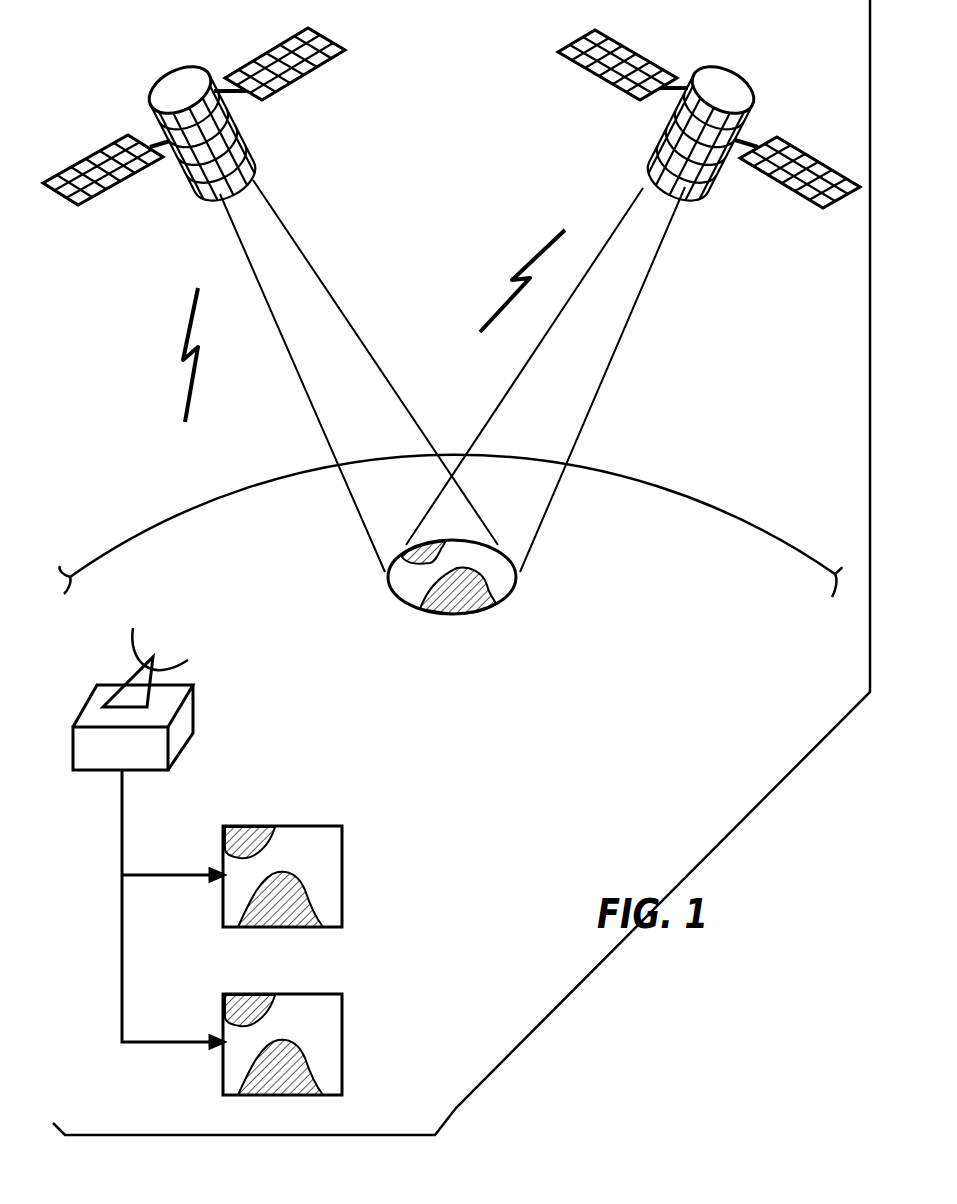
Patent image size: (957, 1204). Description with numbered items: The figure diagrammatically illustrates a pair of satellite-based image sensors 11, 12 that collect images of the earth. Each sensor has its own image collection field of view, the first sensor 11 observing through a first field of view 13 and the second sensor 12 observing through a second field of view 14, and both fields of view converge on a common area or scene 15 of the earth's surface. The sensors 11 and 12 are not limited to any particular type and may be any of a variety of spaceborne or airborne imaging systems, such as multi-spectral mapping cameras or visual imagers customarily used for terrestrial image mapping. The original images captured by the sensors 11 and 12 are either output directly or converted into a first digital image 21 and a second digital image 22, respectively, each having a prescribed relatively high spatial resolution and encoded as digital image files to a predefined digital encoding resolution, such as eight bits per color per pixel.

The image sensor 11 is at (253, 162).
The image sensor 12 is at (706, 189).
The image collection field of view 13 is at (342, 347).
The image collection field of view 14 is at (577, 386).
The common area or scene 15 is at (500, 582).
The first digital image 21 is at (336, 848).
The second digital image 22 is at (333, 1022).